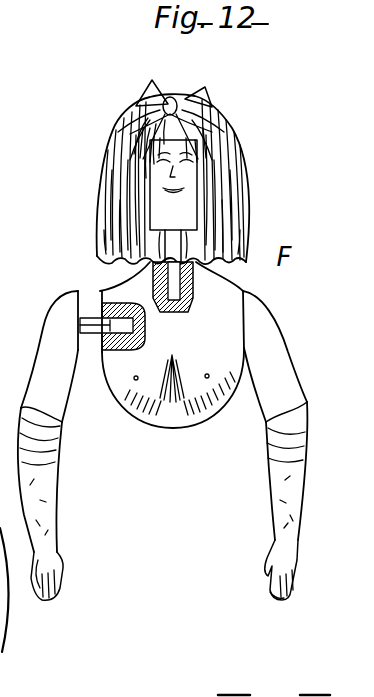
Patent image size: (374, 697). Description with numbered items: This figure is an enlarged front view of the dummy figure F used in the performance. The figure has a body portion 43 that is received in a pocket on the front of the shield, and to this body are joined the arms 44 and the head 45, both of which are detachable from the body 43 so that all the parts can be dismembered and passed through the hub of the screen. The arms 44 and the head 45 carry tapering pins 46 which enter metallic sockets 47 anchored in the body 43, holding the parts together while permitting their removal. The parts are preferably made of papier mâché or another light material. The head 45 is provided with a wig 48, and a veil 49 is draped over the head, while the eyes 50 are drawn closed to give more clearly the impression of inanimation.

The body portion 43 is at (172, 345).
The arms 44 is at (38, 367).
The head 45 is at (186, 198).
The tapering pins 46 is at (89, 305).
The metallic sockets 47 is at (103, 352).
The wig 48 is at (200, 117).
The veil 49 is at (103, 197).
The eyes 50 is at (146, 141).